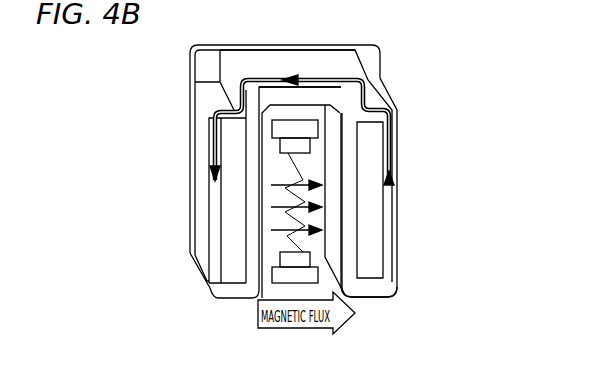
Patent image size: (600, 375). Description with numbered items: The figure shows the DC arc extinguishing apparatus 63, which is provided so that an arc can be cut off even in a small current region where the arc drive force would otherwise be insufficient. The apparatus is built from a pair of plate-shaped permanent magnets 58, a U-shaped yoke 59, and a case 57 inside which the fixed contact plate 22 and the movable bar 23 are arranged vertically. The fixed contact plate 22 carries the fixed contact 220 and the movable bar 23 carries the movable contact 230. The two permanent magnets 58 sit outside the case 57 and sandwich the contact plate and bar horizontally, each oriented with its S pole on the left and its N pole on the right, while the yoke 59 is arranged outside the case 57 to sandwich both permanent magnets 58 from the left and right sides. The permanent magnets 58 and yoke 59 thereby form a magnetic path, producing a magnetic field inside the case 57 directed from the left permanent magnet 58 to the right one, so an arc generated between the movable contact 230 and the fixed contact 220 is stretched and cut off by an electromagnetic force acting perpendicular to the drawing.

The fixed contact plate 22 is at (275, 278).
The movable bar 23 is at (278, 127).
The case 57 is at (375, 290).
The permanent magnets 58 is at (225, 190).
The yoke 59 is at (315, 62).
The DC arc extinguishing apparatus 63 is at (180, 73).
The fixed contact 220 is at (288, 258).
The movable contact 230 is at (283, 145).